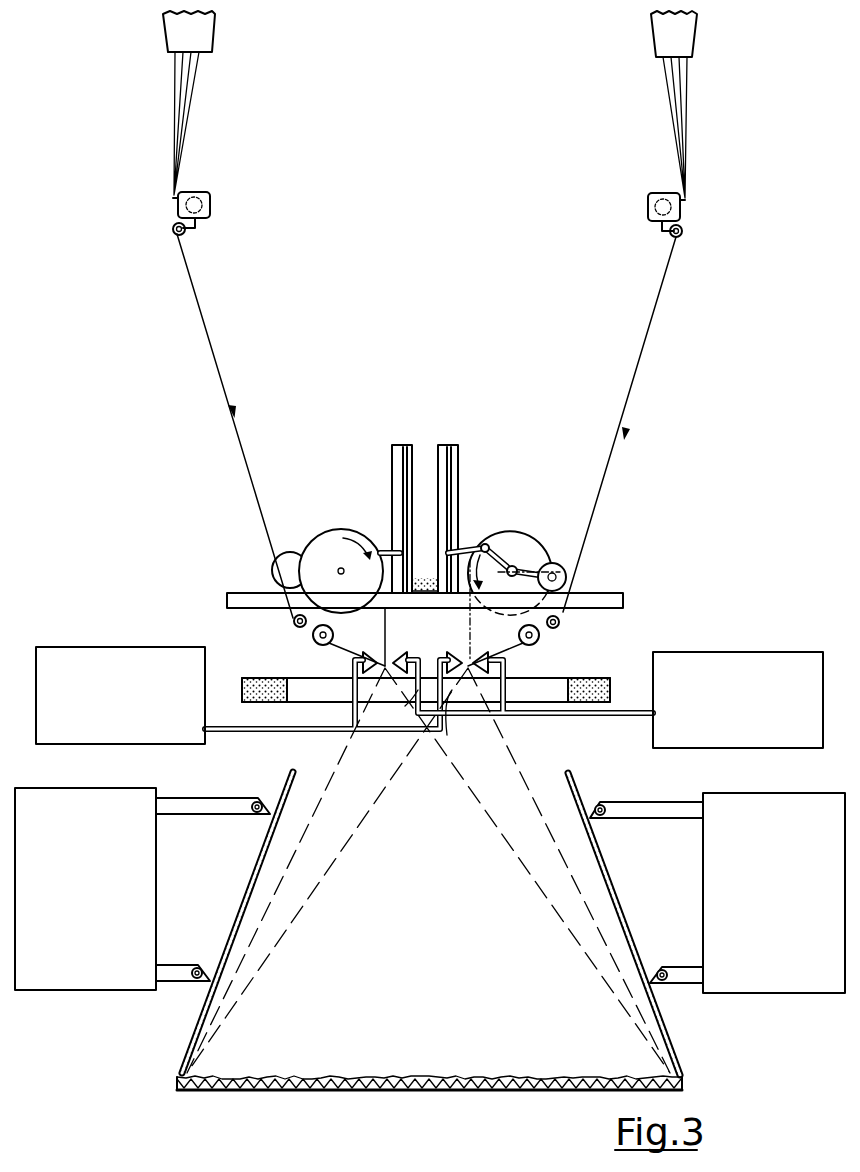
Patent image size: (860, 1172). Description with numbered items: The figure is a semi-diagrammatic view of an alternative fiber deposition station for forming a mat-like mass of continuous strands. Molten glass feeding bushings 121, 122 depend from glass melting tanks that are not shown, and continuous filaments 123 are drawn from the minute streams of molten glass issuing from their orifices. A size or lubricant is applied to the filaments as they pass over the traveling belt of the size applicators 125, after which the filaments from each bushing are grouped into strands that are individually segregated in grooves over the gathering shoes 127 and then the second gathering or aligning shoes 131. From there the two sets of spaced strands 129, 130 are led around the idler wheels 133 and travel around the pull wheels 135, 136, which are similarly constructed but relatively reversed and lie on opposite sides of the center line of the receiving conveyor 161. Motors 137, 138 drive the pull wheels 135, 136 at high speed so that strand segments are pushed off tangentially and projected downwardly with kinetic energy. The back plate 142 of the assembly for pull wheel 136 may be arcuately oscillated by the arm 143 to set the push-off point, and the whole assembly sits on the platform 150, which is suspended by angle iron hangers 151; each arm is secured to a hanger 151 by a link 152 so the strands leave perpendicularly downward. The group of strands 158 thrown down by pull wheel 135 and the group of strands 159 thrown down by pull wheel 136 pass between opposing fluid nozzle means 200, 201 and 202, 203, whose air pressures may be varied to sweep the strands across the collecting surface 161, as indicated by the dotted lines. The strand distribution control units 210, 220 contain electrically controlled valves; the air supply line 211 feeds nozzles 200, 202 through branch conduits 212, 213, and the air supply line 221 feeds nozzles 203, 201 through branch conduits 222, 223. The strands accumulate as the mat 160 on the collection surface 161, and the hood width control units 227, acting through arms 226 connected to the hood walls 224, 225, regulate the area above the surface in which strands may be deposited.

The molten glass feeding bushing 121 is at (214, 36).
The molten glass feeding bushing 122 is at (696, 44).
The continuous filaments 123 is at (190, 96).
The size applicator 125 is at (208, 192).
The gathering shoe 127 is at (186, 234).
The set of spaced strands 129 is at (205, 302).
The set of spaced strands 130 is at (658, 300).
The second gathering or aligning shoe 131 is at (293, 620).
The idler wheel 133 is at (313, 638).
The pull wheel 135 is at (332, 531).
The pull wheel 136 is at (505, 528).
The motor 137 is at (286, 560).
The motor 138 is at (568, 560).
The back plate 142 is at (545, 563).
The arm 143 is at (512, 560).
The platform 150 is at (618, 592).
The angle iron hanger 151 is at (428, 447).
The link 152 is at (388, 548).
The group of strands 158 is at (384, 636).
The group of strands 159 is at (470, 615).
The mat 160 is at (345, 1076).
The collection surface 161 is at (178, 1088).
The fluid nozzle means 200 is at (362, 657).
The fluid nozzle means 201 is at (398, 652).
The fluid nozzle means 202 is at (452, 654).
The fluid nozzle means 203 is at (488, 660).
The strand distribution control unit 210 is at (140, 647).
The air supply line 211 is at (280, 728).
The branch conduit 212 is at (350, 688).
The branch conduit 213 is at (447, 728).
The strand distribution control unit 220 is at (765, 652).
The air supply line 221 is at (640, 722).
The branch conduit 222 is at (505, 690).
The branch conduit 223 is at (412, 700).
The hood wall 224 is at (578, 778).
The hood wall 225 is at (288, 778).
The arm 226 is at (220, 797).
The hood width control unit 227 is at (108, 790).